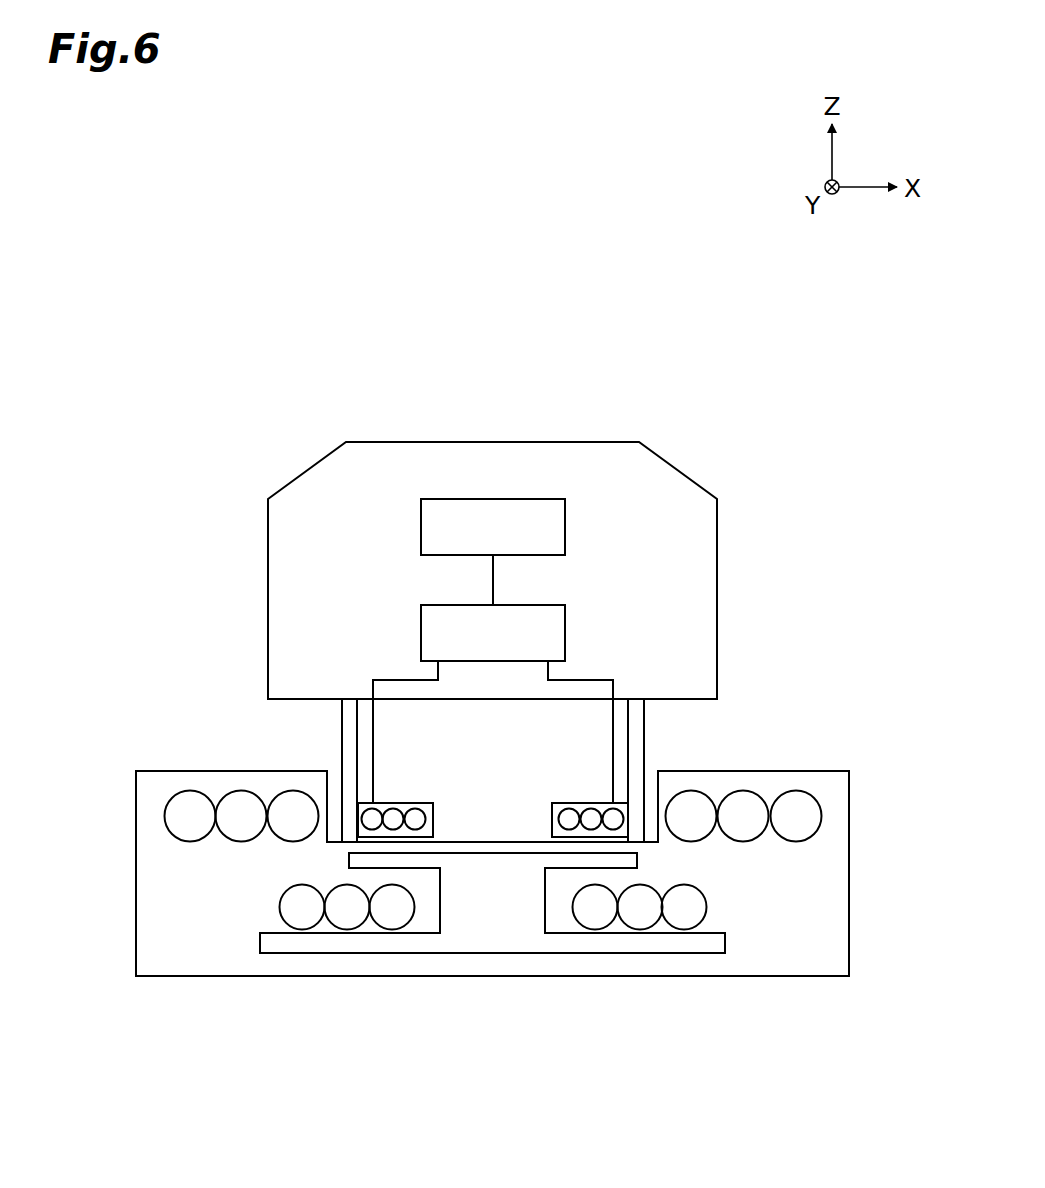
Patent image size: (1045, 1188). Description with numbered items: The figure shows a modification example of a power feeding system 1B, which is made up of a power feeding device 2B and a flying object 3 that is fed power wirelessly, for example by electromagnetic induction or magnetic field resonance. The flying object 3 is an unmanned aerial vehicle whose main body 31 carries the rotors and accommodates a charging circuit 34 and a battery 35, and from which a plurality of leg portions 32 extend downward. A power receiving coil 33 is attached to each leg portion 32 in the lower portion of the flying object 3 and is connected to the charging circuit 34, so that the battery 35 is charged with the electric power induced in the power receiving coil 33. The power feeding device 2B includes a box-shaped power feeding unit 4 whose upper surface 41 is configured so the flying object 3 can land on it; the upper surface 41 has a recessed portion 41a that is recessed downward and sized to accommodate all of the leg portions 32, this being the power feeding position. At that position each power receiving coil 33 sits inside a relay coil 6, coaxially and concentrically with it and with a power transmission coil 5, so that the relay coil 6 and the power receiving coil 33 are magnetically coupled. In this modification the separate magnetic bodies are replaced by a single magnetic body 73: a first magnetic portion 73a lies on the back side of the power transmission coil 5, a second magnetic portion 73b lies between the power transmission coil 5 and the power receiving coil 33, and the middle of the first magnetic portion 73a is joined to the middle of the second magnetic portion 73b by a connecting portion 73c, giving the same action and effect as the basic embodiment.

The power feeding system 1B is at (808, 333).
The power feeding device 2B is at (190, 768).
The flying object 3 is at (640, 440).
The main body 31 is at (718, 556).
The leg portion 32 is at (341, 733).
The power receiving coil 33 is at (393, 803).
The charging circuit 34 is at (420, 631).
The battery 35 is at (420, 526).
The power feeding unit 4 is at (850, 803).
The upper surface 41 is at (792, 770).
The recessed portion 41a is at (649, 802).
The power transmission coil 5 is at (279, 907).
The relay coil 6 is at (164, 817).
The magnetic body 73 is at (412, 956).
The first magnetic portion 73a is at (320, 954).
The second magnetic portion 73b is at (560, 870).
The connecting portion 73c is at (552, 918).